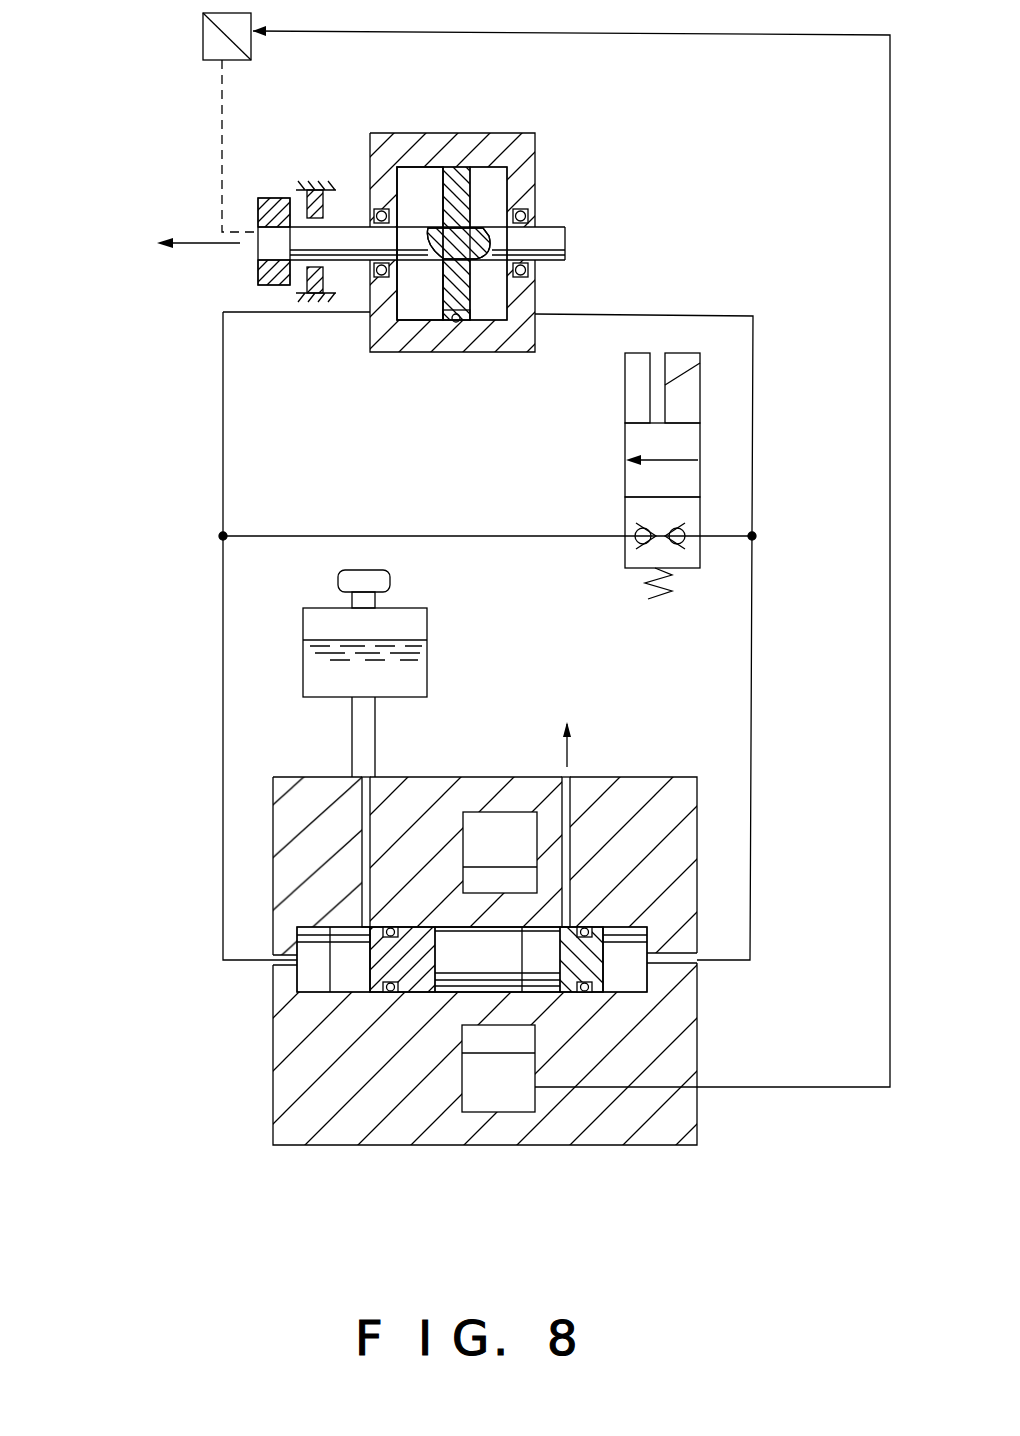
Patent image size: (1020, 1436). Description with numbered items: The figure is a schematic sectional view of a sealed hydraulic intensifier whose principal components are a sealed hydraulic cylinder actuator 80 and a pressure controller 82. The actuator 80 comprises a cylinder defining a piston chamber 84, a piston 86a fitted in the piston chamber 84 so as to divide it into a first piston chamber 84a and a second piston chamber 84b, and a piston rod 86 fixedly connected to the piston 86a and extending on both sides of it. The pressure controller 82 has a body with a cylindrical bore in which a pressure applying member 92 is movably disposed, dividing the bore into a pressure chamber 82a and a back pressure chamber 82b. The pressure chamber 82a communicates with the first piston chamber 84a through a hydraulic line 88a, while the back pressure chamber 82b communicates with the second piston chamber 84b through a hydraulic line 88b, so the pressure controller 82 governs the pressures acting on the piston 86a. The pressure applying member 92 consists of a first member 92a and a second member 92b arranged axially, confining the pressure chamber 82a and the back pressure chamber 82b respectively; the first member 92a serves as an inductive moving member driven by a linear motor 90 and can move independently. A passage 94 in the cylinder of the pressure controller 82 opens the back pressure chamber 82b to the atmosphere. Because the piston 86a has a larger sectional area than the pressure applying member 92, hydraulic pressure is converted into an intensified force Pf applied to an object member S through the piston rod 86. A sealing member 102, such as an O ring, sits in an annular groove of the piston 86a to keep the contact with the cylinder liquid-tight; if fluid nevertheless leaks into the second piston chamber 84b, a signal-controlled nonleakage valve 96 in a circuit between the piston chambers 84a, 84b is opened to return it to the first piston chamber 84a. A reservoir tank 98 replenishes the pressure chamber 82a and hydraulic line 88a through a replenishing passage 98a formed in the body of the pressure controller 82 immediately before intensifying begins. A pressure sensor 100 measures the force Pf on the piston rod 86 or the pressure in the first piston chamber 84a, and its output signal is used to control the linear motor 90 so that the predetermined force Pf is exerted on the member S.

The sealed hydraulic cylinder actuator 80 is at (570, 123).
The pressure controller 82 is at (702, 1100).
The pressure chamber 82a is at (313, 977).
The back pressure chamber 82b is at (630, 984).
The piston chamber 84 is at (422, 190).
The first piston chamber 84a is at (412, 310).
The second piston chamber 84b is at (488, 312).
The piston rod 86 is at (565, 243).
The piston 86a is at (461, 203).
The hydraulic line 88a is at (223, 612).
The hydraulic line 88b is at (751, 612).
The linear motor 90 is at (503, 1098).
The pressure applying member 92 is at (440, 1009).
The first member 92a is at (427, 985).
The second member 92b is at (593, 1000).
The passage 94 is at (568, 800).
The nonleakage valve 96 is at (705, 444).
The reservoir tank 98 is at (420, 666).
The replenishing passage 98a is at (370, 796).
The pressure sensor 100 is at (203, 35).
The sealing member 102 is at (455, 322).
The object member S is at (328, 278).
The intensified force Pf is at (176, 246).